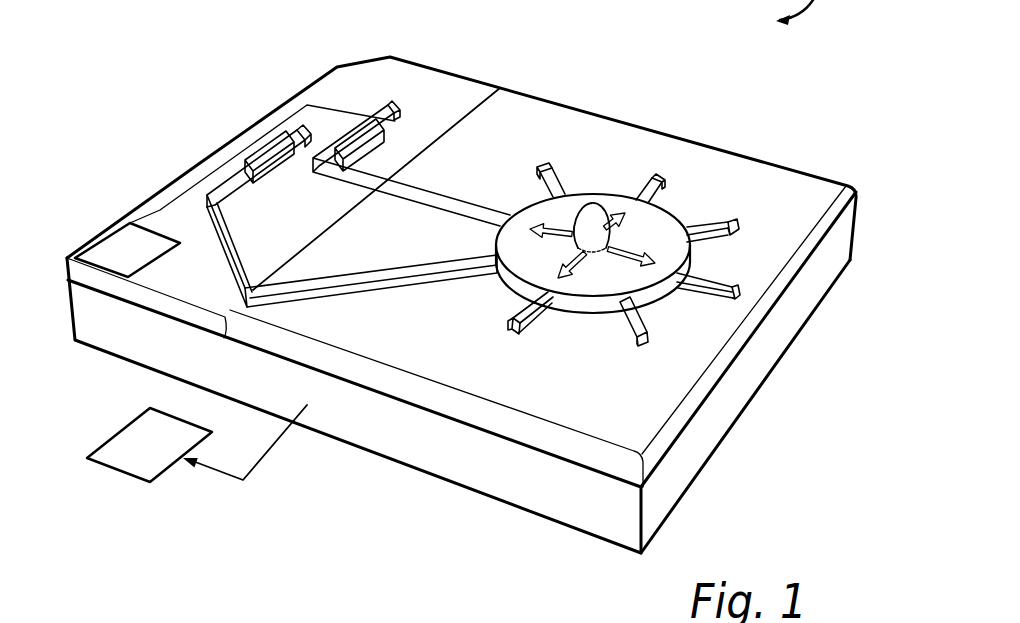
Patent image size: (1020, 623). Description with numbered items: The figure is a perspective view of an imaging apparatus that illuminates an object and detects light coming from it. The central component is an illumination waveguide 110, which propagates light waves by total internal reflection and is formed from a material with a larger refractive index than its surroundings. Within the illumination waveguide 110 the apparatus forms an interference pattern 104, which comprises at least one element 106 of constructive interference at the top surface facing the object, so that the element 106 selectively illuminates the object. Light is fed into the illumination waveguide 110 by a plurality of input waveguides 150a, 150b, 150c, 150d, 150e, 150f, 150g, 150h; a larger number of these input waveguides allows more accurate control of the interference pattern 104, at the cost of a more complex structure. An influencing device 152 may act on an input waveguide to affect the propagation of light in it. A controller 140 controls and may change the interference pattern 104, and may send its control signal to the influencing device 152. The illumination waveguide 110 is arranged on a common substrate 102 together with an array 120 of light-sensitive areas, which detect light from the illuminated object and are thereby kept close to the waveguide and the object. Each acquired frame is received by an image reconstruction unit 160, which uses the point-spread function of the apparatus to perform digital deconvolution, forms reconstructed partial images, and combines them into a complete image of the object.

The common substrate 102 is at (670, 483).
The interference pattern 104 is at (620, 196).
The element of constructive interference 106 is at (592, 228).
The illumination waveguide 110 is at (665, 290).
The array of light-sensitive areas 120 is at (360, 420).
The controller 140 is at (117, 240).
The input waveguide 150a is at (385, 100).
The input waveguide 150b is at (300, 147).
The input waveguide 150c is at (513, 330).
The input waveguide 150d is at (640, 340).
The input waveguide 150e is at (738, 296).
The input waveguide 150f is at (727, 220).
The input waveguide 150g is at (653, 190).
The input waveguide 150h is at (555, 170).
The influencing device 152 is at (273, 147).
The image reconstruction unit 160 is at (147, 467).